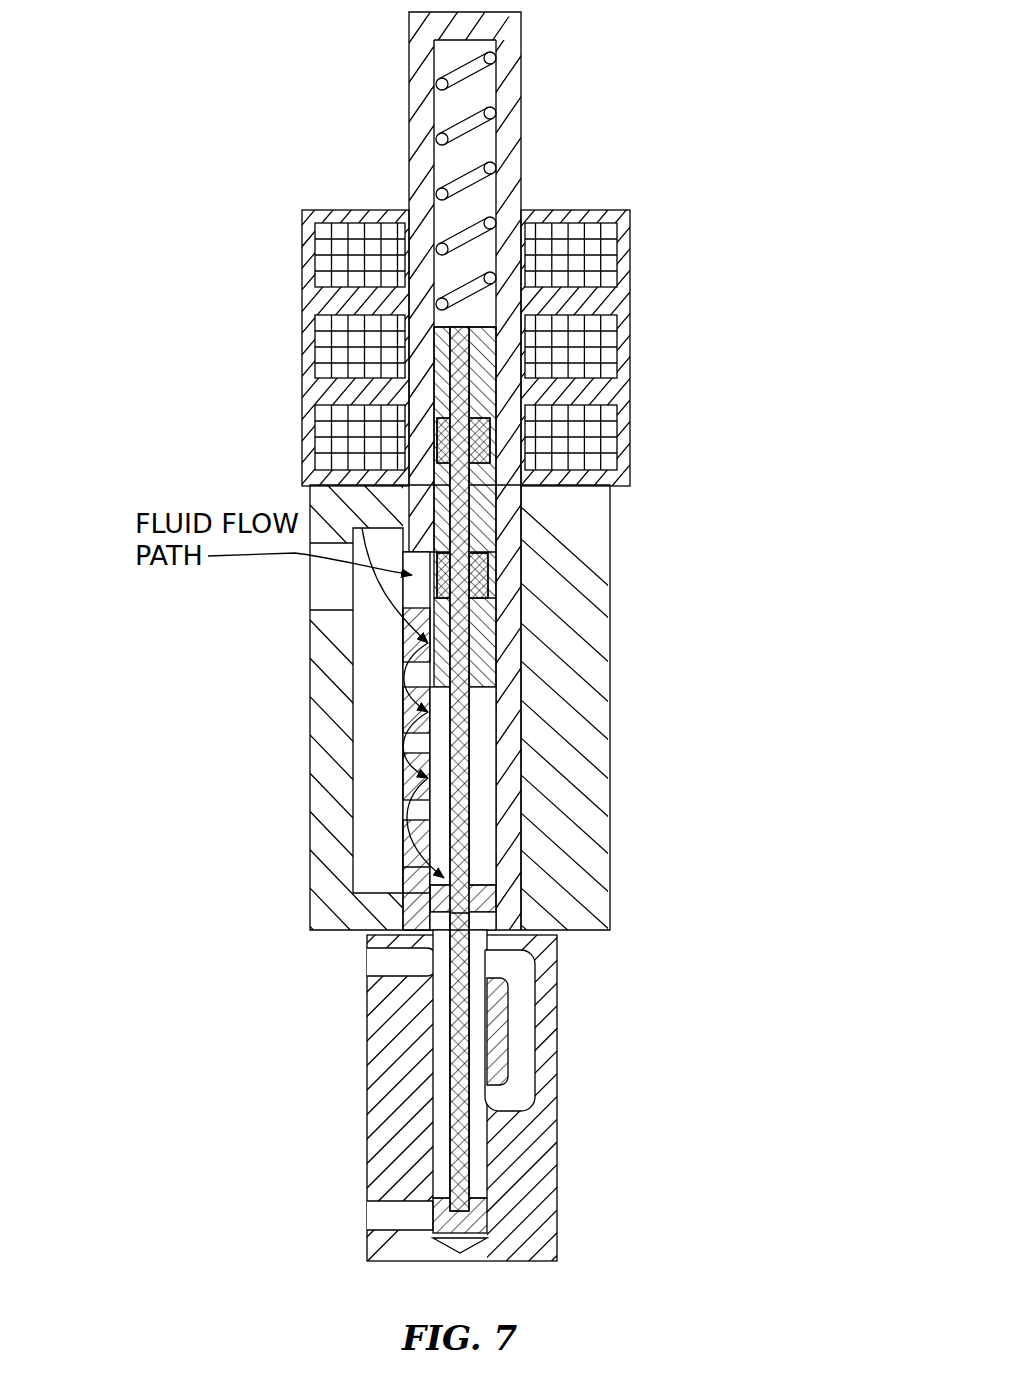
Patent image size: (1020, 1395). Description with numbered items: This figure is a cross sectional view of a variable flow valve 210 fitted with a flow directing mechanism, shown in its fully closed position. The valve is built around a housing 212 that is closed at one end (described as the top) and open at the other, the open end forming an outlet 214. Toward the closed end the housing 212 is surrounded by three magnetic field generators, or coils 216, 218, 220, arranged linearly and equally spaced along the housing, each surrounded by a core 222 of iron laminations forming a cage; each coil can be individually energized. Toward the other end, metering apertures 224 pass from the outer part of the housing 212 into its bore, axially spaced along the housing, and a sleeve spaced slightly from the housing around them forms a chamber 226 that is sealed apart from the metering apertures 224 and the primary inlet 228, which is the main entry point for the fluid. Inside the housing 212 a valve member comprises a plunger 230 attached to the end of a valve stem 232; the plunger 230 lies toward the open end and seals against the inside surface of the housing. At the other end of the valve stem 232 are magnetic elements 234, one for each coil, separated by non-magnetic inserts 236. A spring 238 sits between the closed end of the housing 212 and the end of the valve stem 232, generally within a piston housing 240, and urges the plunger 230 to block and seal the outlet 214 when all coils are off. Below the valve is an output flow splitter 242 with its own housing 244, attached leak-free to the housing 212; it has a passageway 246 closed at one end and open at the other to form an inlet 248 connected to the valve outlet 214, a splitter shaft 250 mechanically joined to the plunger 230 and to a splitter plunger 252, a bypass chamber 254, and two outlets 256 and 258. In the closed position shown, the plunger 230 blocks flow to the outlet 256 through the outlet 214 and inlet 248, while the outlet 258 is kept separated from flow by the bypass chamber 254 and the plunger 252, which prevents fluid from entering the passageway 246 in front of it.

The variable flow valve 210 is at (306, 750).
The housing 212 is at (577, 878).
The outlet 214 is at (495, 900).
The magnetic field generator 216 is at (592, 245).
The magnetic field generator 218 is at (592, 340).
The magnetic field generator 220 is at (592, 430).
The core 222 is at (310, 455).
The metering apertures 224 is at (415, 857).
The chamber 226 is at (356, 635).
The primary inlet 228 is at (315, 597).
The plunger 230 is at (413, 923).
The valve stem 232 is at (474, 707).
The magnetic elements 234 is at (494, 620).
The non-magnetic insert 236 is at (488, 578).
The spring 238 is at (465, 125).
The piston housing 240 is at (482, 807).
The output flow splitter 242 is at (562, 1238).
The housing 244 is at (540, 1125).
The passageway 246 is at (480, 1185).
The inlet 248 is at (500, 975).
The splitter shaft 250 is at (445, 1085).
The plunger 252 is at (438, 1195).
The bypass chamber 254 is at (520, 1040).
The outlet 256 is at (377, 963).
The outlet 258 is at (380, 1217).